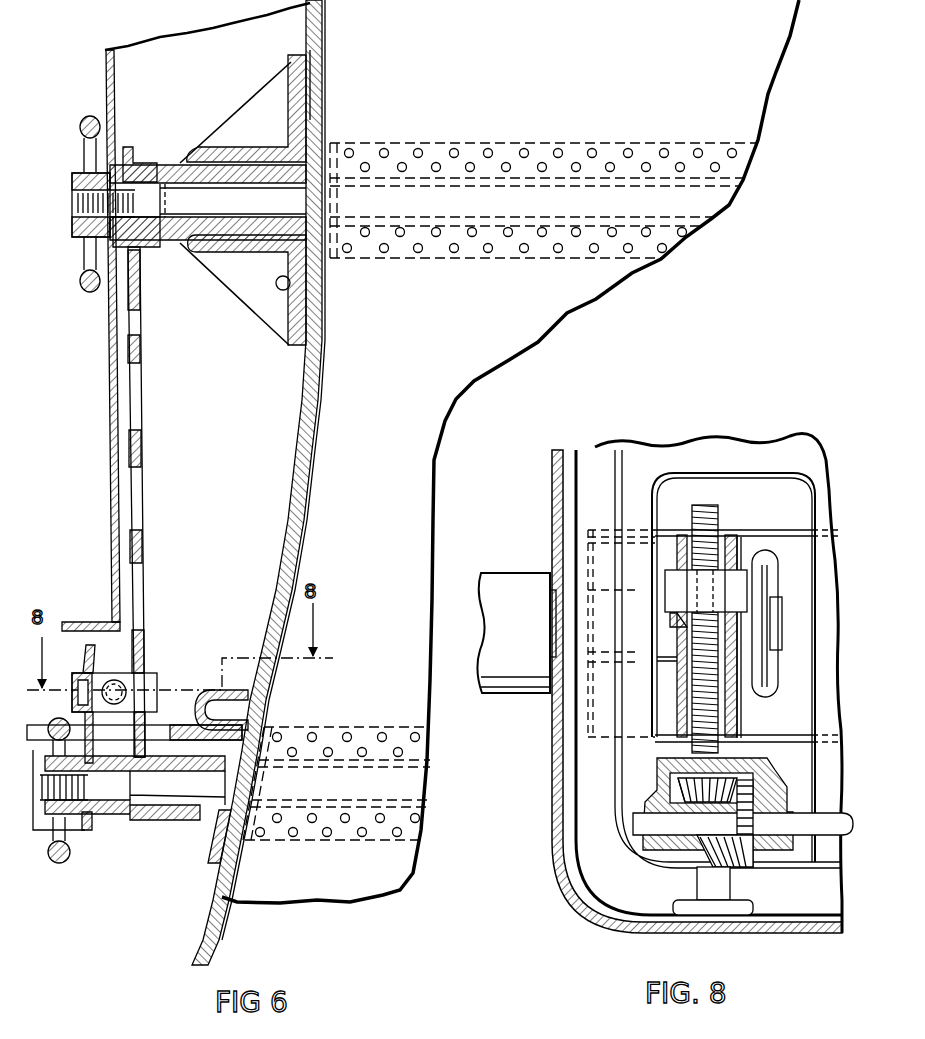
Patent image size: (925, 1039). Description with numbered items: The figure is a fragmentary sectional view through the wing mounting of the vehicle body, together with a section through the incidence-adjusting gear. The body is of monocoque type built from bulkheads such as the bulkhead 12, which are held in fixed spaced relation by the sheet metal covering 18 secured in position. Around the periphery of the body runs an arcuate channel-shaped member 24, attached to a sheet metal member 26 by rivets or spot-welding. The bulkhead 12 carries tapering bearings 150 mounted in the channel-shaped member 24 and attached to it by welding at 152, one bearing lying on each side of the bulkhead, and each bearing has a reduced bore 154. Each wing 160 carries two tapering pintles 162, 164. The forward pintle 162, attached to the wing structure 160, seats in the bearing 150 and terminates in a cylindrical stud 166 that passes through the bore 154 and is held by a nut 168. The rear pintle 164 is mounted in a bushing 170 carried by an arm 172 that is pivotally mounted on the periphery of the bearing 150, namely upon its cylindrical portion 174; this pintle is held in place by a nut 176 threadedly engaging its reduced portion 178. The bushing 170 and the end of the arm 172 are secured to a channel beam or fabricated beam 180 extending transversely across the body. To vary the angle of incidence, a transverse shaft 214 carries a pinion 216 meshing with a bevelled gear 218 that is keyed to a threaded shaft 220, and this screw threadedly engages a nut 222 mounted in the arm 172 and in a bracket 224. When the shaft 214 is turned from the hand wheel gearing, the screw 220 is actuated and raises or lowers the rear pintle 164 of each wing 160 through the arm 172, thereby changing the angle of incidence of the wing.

In FIG. 6, the bulkhead 12 is at (322, 106).
In FIG. 6, the sheet metal covering 18 is at (325, 32).
In FIG. 6, the channel-shaped member 24 is at (290, 63).
In FIG. 6, the sheet metal member 26 is at (322, 58).
In FIG. 6, the tapering bearing 150 is at (182, 247).
In FIG. 6, the weld attachment 152 is at (277, 244).
In FIG. 6, the reduced bore 154 is at (133, 162).
In FIG. 6, the wing 160 is at (418, 473).
In FIG. 8, the wing 160 is at (527, 580).
In FIG. 6, the tapering pintle 162 is at (253, 193).
In FIG. 6, the tapering pintle 164 is at (187, 777).
In FIG. 8, the tapering pintle 164 is at (582, 622).
In FIG. 6, the cylindrical stud 166 is at (72, 204).
In FIG. 6, the nut 168 is at (80, 121).
In FIG. 6, the bushing 170 is at (177, 823).
In FIG. 6, the arm 172 is at (141, 540).
In FIG. 8, the arm 172 is at (683, 677).
In FIG. 6, the cylindrical portion 174 is at (140, 244).
In FIG. 6, the nut 176 is at (56, 863).
In FIG. 8, the nut 176 is at (777, 597).
In FIG. 6, the reduced portion 178 is at (86, 830).
In FIG. 6, the channel beam 180 is at (172, 726).
In FIG. 8, the channel beam 180 is at (788, 528).
In FIG. 8, the transverse shaft 214 is at (832, 820).
In FIG. 8, the pinion 216 is at (752, 858).
In FIG. 8, the bevelled gear 218 is at (672, 787).
In FIG. 6, the threaded shaft 220 is at (102, 692).
In FIG. 8, the threaded shaft 220 is at (720, 717).
In FIG. 6, the nut 222 is at (143, 680).
In FIG. 8, the nut 222 is at (703, 590).
In FIG. 6, the bracket 224 is at (96, 656).
In FIG. 8, the bracket 224 is at (733, 535).